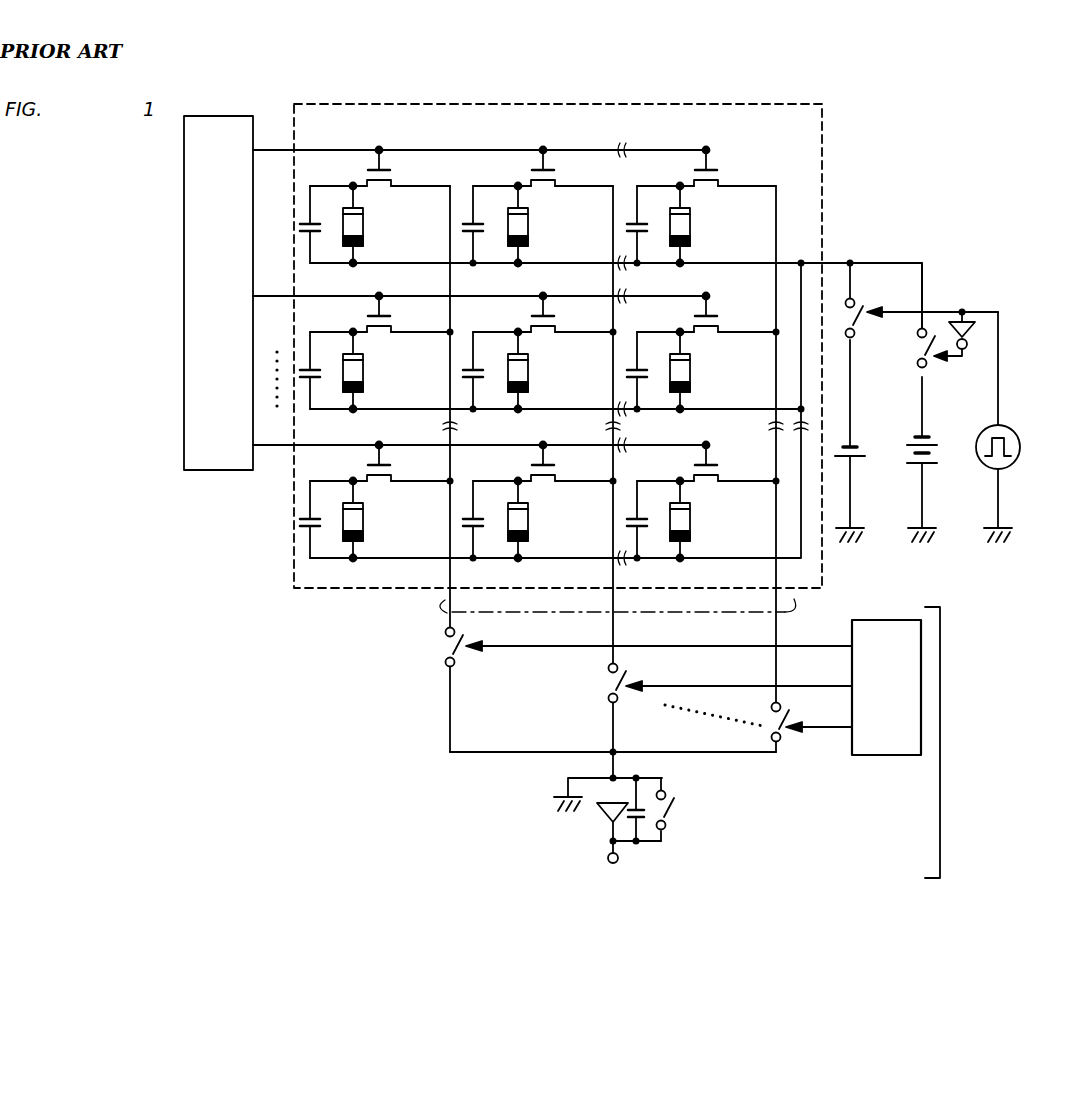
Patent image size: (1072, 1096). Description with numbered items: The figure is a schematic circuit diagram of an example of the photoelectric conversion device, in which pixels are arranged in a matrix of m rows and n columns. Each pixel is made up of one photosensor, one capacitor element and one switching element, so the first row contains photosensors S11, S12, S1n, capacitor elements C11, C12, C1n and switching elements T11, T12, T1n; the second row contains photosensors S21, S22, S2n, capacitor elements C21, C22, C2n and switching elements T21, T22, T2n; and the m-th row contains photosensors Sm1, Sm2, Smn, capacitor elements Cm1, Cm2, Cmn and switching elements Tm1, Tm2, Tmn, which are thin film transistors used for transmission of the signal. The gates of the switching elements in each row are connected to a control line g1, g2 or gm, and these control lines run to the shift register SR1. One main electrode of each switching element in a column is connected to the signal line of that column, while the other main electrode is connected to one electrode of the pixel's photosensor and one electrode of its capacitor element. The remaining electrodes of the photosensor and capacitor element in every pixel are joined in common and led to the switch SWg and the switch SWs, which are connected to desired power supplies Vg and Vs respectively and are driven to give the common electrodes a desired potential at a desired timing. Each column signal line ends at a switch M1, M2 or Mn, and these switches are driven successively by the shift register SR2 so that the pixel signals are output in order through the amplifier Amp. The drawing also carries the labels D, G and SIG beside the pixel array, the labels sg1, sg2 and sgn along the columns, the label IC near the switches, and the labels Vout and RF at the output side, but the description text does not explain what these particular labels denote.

The shift register SR1 is at (218, 293).
The shift register SR2 is at (886, 687).
The control line g1 is at (479, 136).
The control line g2 is at (479, 282).
The control line gm is at (479, 430).
The capacitor element C11 is at (323, 212).
The capacitor element C12 is at (486, 212).
The capacitor element C1n is at (650, 212).
The capacitor element C21 is at (323, 358).
The capacitor element C22 is at (486, 358).
The capacitor element C2n is at (650, 358).
The capacitor element Cm1 is at (326, 507).
The capacitor element Cm2 is at (489, 507).
The capacitor element Cmn is at (653, 507).
The switching element T11 is at (400, 167).
The switching element T12 is at (564, 167).
The switching element T1n is at (727, 167).
The switching element T21 is at (400, 313).
The switching element T22 is at (564, 313).
The switching element T2n is at (727, 313).
The switching element Tm1 is at (403, 462).
The switching element Tm2 is at (567, 462).
The switching element Tmn is at (730, 462).
The photosensor S11 is at (375, 225).
The photosensor S12 is at (540, 225).
The photosensor S1n is at (706, 225).
The photosensor S21 is at (375, 371).
The photosensor S22 is at (540, 371).
The photosensor S2n is at (706, 371).
The photosensor Sm1 is at (379, 520).
The photosensor Sm2 is at (544, 520).
The photosensor Smn is at (710, 520).
The D electrode of sensor D is at (329, 204).
The G electrode of sensor G is at (329, 250).
The signal lines SIG is at (592, 444).
The switch M1 is at (468, 690).
The switch M2 is at (632, 721).
The switch Mn is at (795, 732).
The first switch control line sg1 is at (659, 635).
The second switch control line sg2 is at (739, 675).
The n-th switch control line sgn is at (819, 715).
The read-out integrated circuit IC is at (947, 742).
The amplifier Amp is at (641, 815).
The output terminal Vout is at (605, 873).
The switch SWg is at (922, 355).
The switch SWs is at (926, 350).
The power supply Vg is at (859, 494).
The power supply Vs is at (930, 489).
The refresh control circuit (pulse source) RF is at (1006, 427).